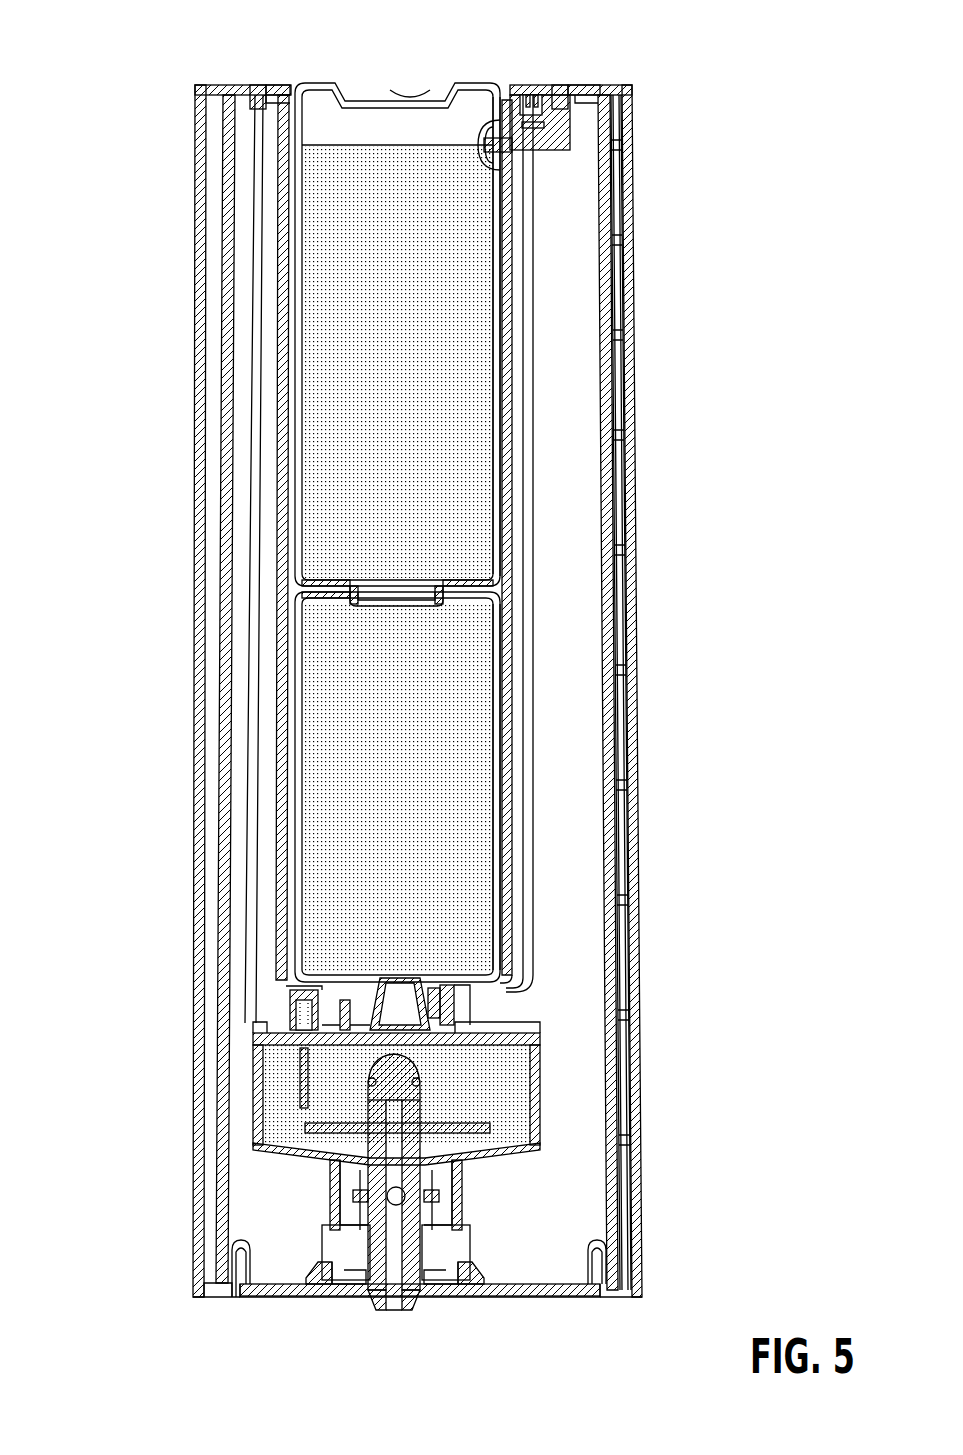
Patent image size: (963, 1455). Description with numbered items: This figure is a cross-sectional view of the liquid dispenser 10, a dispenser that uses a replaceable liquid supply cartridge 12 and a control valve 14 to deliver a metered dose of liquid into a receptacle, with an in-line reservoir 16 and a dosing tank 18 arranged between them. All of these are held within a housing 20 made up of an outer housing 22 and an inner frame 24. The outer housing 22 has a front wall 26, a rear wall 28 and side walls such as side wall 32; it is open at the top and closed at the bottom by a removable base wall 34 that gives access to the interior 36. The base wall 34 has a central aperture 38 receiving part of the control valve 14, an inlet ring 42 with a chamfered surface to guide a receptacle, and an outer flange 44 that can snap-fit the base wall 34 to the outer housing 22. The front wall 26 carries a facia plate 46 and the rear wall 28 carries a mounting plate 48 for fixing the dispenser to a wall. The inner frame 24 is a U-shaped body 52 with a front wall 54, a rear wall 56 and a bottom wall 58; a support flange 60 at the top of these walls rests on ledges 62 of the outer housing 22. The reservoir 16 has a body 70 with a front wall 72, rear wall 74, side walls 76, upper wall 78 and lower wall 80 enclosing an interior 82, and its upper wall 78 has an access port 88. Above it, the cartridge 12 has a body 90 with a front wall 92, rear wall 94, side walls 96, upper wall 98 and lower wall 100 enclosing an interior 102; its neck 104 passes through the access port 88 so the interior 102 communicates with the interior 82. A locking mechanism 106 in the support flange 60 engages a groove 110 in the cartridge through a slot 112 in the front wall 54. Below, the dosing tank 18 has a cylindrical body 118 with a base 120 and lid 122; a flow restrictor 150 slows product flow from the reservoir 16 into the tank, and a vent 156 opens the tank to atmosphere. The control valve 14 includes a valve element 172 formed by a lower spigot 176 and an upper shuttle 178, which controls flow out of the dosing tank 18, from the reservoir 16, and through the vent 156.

The liquid dispenser 10 is at (70, 42).
The liquid supply cartridge 12 is at (508, 238).
The control valve 14 is at (462, 1198).
The reservoir 16 is at (502, 716).
The dosing tank 18 is at (536, 986).
The housing 20 is at (165, 178).
The outer housing 22 is at (616, 396).
The inner frame 24 is at (520, 428).
The front wall 26 is at (604, 326).
The rear wall 28 is at (228, 340).
The side wall 32 is at (583, 897).
The base wall 34 is at (276, 1298).
The interior 36 is at (590, 1178).
The central aperture 38 is at (322, 1298).
The inlet ring 42 is at (462, 1292).
The outer flange 44 is at (566, 1268).
The facia plate 46 is at (637, 264).
The mounting plate 48 is at (194, 260).
The U-shaped body 52 is at (513, 495).
The front wall 54 is at (525, 377).
The rear wall 56 is at (284, 437).
The bottom wall 58 is at (468, 982).
The support flange 60 is at (256, 86).
The ledge 62 is at (272, 86).
The body 70 is at (502, 758).
The front wall 72 is at (495, 697).
The rear wall 74 is at (301, 756).
The side wall 76 is at (412, 674).
The upper wall 78 is at (334, 598).
The lower wall 80 is at (322, 986).
The interior 82 is at (423, 843).
The access port 88 is at (362, 590).
The body 90 is at (502, 278).
The front wall 92 is at (495, 325).
The rear wall 94 is at (301, 374).
The side wall 96 is at (412, 254).
The upper wall 98 is at (340, 88).
The lower wall 100 is at (333, 584).
The interior 102 is at (431, 458).
The neck 104 is at (432, 584).
The locking mechanism 106 is at (545, 150).
The groove 110 is at (482, 140).
The slot 112 is at (500, 176).
The cylindrical body 118 is at (540, 1052).
The base 120 is at (545, 1128).
The lid 122 is at (540, 1022).
The flow restrictor 150 is at (396, 975).
The vent 156 is at (272, 1002).
The valve element 172 is at (500, 1090).
The spigot 176 is at (396, 1316).
The shuttle 178 is at (448, 1122).